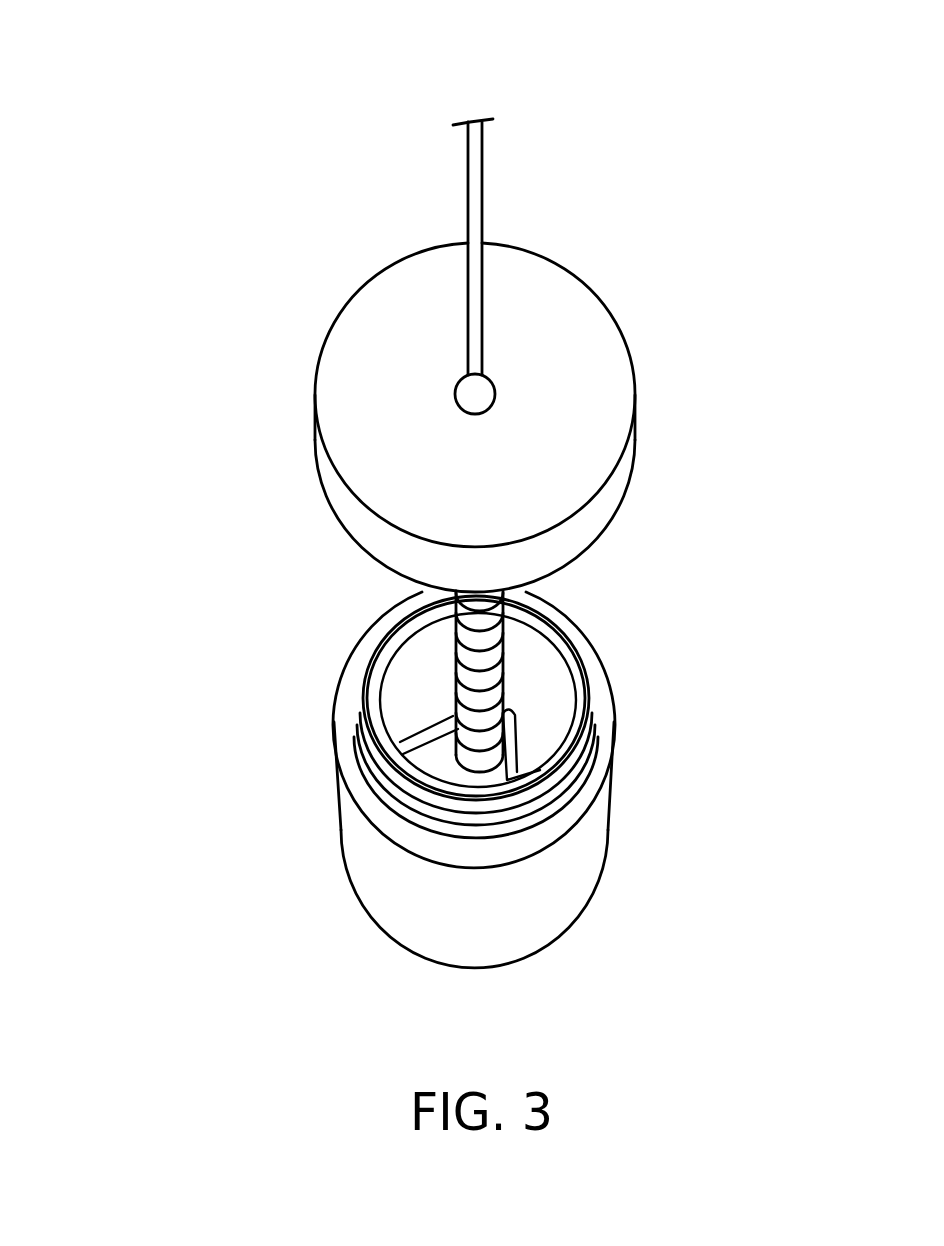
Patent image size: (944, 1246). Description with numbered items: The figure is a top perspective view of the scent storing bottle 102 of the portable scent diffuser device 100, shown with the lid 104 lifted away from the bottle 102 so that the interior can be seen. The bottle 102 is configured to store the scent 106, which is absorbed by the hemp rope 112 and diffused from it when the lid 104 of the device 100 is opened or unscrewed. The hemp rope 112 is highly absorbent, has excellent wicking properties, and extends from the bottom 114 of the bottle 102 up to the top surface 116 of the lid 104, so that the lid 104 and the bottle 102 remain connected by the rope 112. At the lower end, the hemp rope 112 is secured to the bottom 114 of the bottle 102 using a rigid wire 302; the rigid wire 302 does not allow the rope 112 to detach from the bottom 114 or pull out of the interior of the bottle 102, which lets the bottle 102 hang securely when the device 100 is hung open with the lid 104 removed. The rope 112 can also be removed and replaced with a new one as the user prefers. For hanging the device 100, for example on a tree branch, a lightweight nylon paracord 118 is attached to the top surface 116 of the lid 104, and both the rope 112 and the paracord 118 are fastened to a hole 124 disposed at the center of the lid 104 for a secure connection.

The portable scent diffuser device 100 is at (167, 174).
The bottle 102 is at (358, 883).
The lid 104 is at (335, 467).
The stored scent 106 is at (533, 708).
The hemp rope 112 is at (366, 665).
The bottom of the bottle 114 is at (580, 920).
The top surface of the lid 116 is at (362, 333).
The nylon paracord 118 is at (468, 176).
The hole 124 is at (482, 370).
The rigid wire 302 is at (615, 717).